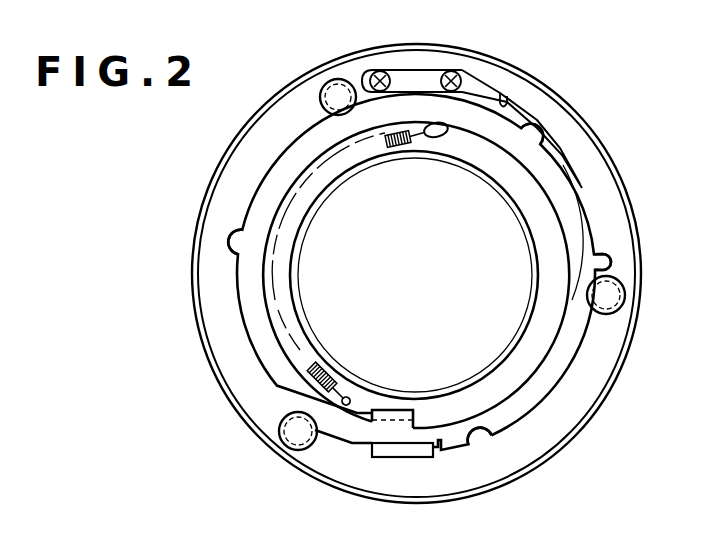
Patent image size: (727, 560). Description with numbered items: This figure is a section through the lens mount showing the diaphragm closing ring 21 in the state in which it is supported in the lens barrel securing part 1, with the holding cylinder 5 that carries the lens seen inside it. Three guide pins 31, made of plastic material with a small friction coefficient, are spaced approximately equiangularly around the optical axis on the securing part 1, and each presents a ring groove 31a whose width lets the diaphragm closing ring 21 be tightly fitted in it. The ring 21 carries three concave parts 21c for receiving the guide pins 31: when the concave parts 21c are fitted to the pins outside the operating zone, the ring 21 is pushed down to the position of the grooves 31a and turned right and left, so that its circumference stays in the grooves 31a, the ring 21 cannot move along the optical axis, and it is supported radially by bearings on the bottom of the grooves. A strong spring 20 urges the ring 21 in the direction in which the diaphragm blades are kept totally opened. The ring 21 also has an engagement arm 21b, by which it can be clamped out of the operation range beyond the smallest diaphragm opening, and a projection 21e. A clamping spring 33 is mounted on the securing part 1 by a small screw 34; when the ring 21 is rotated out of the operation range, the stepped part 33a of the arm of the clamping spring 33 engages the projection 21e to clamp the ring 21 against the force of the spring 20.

The lens barrel securing part 1 is at (227, 343).
The holding cylinder 5 is at (492, 373).
The spring 20 is at (308, 386).
The diaphragm closing ring 21 is at (287, 165).
The engagement arm 21b is at (402, 457).
The concave part 21c is at (538, 138).
The projection 21e is at (608, 258).
The guide pin 31 is at (336, 92).
The groove 31a is at (618, 305).
The clamping spring 33 is at (410, 72).
The stepped part 33a is at (503, 92).
The small screw 34 is at (452, 70).